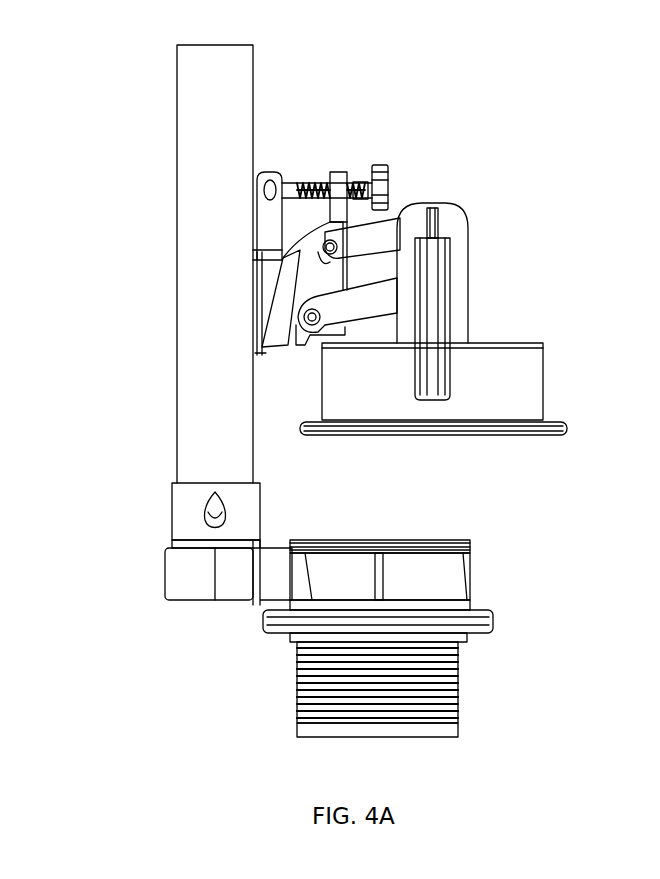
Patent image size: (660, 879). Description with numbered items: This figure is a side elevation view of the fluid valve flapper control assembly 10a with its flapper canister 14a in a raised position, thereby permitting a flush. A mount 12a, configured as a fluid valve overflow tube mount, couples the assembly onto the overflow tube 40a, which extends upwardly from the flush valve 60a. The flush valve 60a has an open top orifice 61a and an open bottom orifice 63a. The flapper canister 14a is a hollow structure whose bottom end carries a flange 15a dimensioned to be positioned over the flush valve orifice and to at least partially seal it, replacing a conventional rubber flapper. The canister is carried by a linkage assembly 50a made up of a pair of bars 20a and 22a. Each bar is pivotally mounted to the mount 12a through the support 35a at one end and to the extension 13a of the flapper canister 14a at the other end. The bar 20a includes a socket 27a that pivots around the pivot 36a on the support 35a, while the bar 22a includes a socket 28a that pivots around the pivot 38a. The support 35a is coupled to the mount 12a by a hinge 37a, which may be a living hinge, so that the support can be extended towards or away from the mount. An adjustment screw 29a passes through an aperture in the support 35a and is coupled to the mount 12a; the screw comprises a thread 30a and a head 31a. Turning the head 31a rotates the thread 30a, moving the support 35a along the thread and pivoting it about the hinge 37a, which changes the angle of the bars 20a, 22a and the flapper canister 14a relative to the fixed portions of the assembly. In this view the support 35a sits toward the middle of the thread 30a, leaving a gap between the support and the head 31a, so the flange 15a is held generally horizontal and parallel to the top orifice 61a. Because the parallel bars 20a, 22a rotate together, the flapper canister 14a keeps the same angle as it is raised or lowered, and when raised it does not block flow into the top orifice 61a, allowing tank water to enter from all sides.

The fluid valve flapper control assembly 10a is at (485, 130).
The mount 12a is at (272, 170).
The extension 13a is at (458, 228).
The flapper canister 14a is at (525, 365).
The flange 15a is at (565, 422).
The bar 20a is at (398, 215).
The bar 22a is at (357, 322).
The socket 27a is at (318, 243).
The socket 28a is at (302, 332).
The adjustment screw 29a is at (360, 183).
The thread 30a is at (298, 183).
The head 31a is at (382, 165).
The support 35a is at (340, 172).
The pivot 36a is at (330, 256).
The hinge 37a is at (288, 345).
The pivot 38a is at (320, 312).
The overflow tube 40a is at (190, 93).
The linkage assembly 50a is at (460, 188).
The flush valve 60a is at (470, 570).
The top orifice 61a is at (463, 538).
The bottom orifice 63a is at (440, 750).